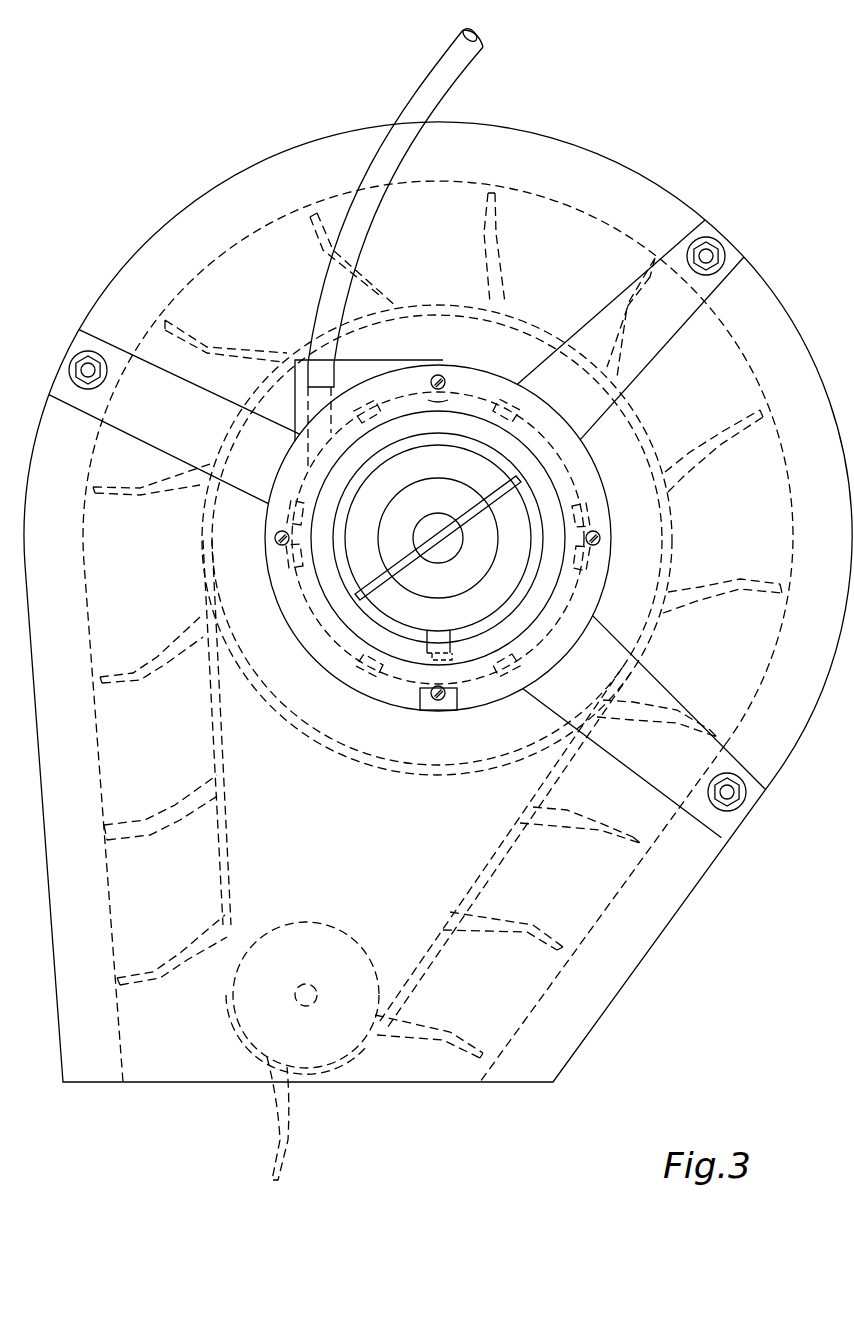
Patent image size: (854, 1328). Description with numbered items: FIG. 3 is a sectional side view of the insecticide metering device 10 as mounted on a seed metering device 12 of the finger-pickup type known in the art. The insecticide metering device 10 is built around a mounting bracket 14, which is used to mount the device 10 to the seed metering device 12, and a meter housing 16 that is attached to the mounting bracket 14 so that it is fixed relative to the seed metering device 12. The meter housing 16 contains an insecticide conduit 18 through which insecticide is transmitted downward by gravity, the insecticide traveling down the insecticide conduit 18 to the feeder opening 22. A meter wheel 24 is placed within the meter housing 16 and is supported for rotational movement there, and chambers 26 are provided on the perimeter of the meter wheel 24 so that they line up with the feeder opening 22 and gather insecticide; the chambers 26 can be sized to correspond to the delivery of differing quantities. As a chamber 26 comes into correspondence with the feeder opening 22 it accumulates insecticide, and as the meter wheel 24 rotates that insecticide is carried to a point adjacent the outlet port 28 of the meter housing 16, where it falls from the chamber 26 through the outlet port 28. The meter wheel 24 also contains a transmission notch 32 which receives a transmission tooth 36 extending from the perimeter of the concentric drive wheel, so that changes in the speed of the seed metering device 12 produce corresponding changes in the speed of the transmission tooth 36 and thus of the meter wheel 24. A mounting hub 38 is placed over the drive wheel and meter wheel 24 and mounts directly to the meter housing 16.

The insecticide metering device 10 is at (507, 377).
The seed metering device 12 is at (170, 202).
The mounting bracket 14 is at (163, 435).
The meter housing 16 is at (376, 360).
The insecticide conduit 18 is at (437, 72).
The feeder opening 22 is at (263, 530).
The meter wheel 24 is at (285, 592).
The chambers 26 is at (557, 600).
The outlet port 28 is at (434, 717).
The transmission notch 32 is at (432, 637).
The transmission tooth 36 is at (452, 660).
The mounting hub 38 is at (337, 657).